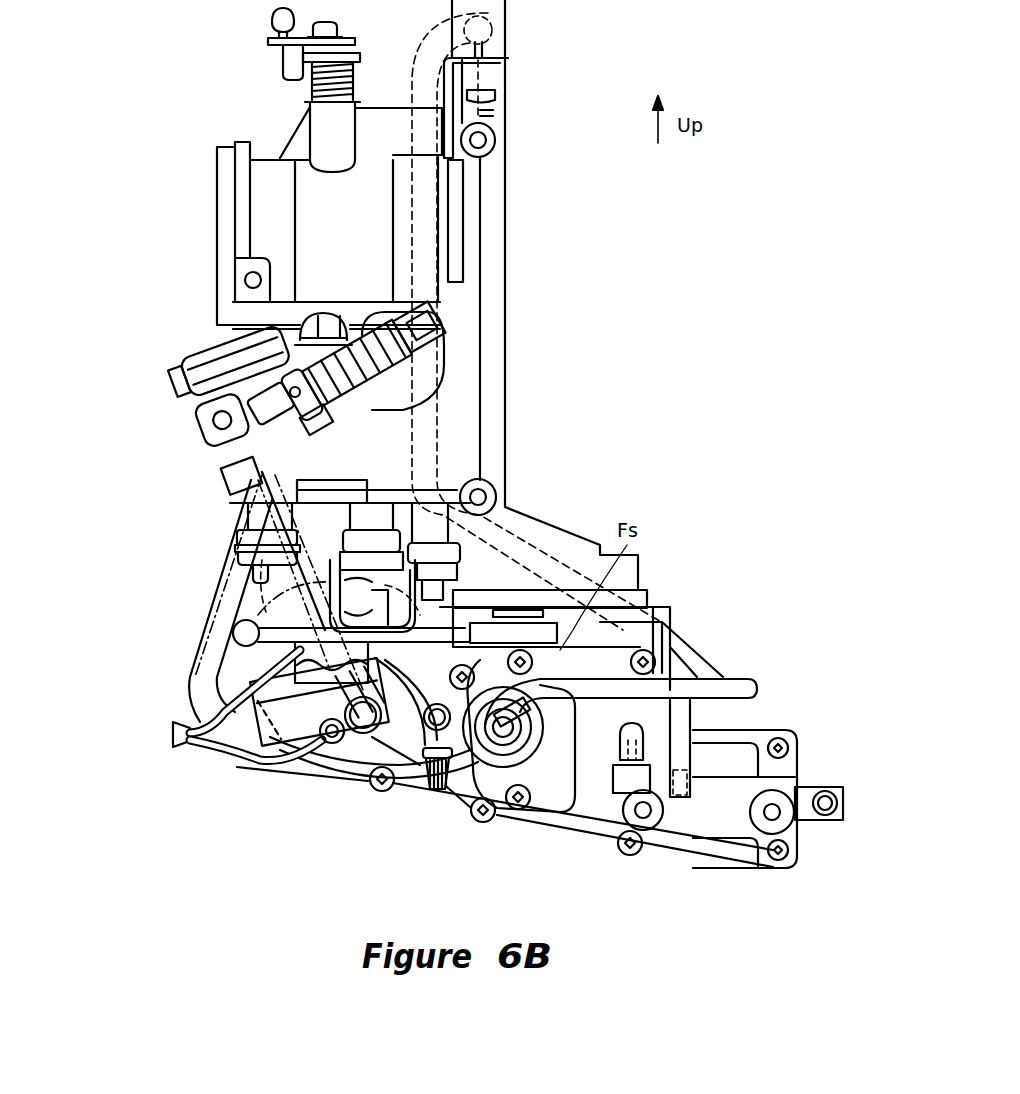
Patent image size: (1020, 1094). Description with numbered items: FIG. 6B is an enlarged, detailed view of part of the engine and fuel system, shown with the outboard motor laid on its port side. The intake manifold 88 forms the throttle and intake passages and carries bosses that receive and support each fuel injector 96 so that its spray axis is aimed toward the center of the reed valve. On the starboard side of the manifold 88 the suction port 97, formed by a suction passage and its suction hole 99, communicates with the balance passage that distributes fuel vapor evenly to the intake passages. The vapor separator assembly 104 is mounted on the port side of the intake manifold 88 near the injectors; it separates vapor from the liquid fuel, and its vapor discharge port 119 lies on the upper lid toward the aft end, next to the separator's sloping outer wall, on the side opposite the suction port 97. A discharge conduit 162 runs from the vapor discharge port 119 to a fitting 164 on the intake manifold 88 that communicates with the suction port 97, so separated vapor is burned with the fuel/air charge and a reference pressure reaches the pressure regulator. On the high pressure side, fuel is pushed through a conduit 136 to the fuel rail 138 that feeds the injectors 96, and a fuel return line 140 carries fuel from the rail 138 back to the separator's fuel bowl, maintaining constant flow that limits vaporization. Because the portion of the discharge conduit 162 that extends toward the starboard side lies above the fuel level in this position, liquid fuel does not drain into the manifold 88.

The intake manifold 88 is at (497, 247).
The fuel injector 96 is at (430, 345).
The suction port 97 is at (482, 72).
The suction hole 99 is at (495, 113).
The vapor separator assembly 104 is at (756, 731).
The vapor discharge port 119 is at (688, 813).
The conduit 136 is at (203, 637).
The fuel rail 138 is at (203, 423).
The fuel return line 140 is at (407, 760).
The discharge conduit 162 is at (550, 557).
The fitting 164 is at (540, 833).